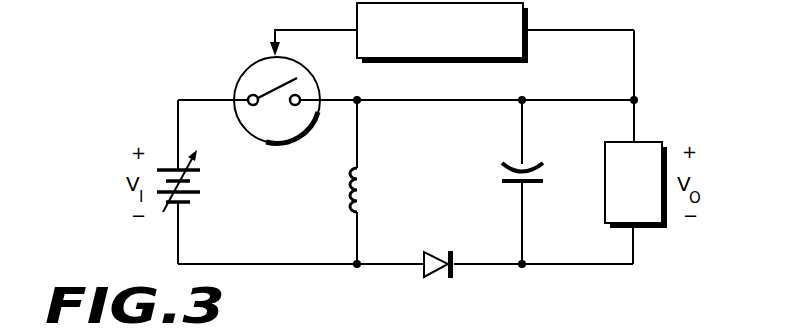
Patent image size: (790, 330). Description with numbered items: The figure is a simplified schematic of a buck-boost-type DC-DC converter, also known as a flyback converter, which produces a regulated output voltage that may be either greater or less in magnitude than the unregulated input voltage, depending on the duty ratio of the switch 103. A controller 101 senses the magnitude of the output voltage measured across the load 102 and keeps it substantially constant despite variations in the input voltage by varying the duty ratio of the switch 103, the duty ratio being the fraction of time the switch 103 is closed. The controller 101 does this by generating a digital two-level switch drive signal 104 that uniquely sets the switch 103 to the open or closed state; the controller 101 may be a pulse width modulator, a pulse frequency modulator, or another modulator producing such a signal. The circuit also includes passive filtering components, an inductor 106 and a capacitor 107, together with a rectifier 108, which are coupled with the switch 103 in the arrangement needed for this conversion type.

The controller 101 is at (528, 48).
The load 102 is at (655, 141).
The switch 103 is at (246, 65).
The switch drive signal 104 is at (317, 28).
The inductor 106 is at (343, 190).
The capacitor 107 is at (543, 160).
The rectifier 108 is at (436, 251).